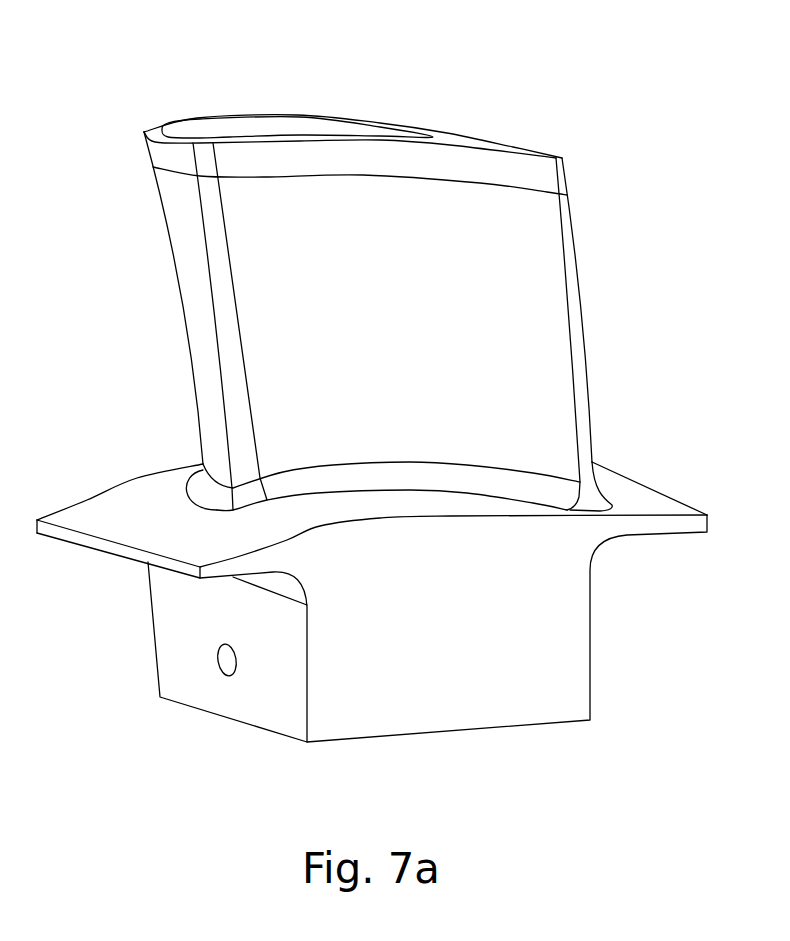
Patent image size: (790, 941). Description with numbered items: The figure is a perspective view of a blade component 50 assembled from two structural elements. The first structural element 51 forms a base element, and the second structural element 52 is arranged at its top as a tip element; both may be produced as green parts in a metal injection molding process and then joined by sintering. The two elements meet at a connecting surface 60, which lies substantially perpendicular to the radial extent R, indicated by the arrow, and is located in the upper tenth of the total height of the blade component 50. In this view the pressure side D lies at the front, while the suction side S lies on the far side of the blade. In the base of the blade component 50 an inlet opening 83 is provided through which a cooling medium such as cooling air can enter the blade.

The suction side S is at (183, 90).
The blade component 50 is at (572, 105).
The first structural element 51 is at (565, 385).
The second structural element 52 is at (372, 152).
The connecting surface 60 is at (568, 195).
The inlet opening 83 is at (223, 668).
The pressure side D is at (413, 322).
The radial extent R is at (70, 348).